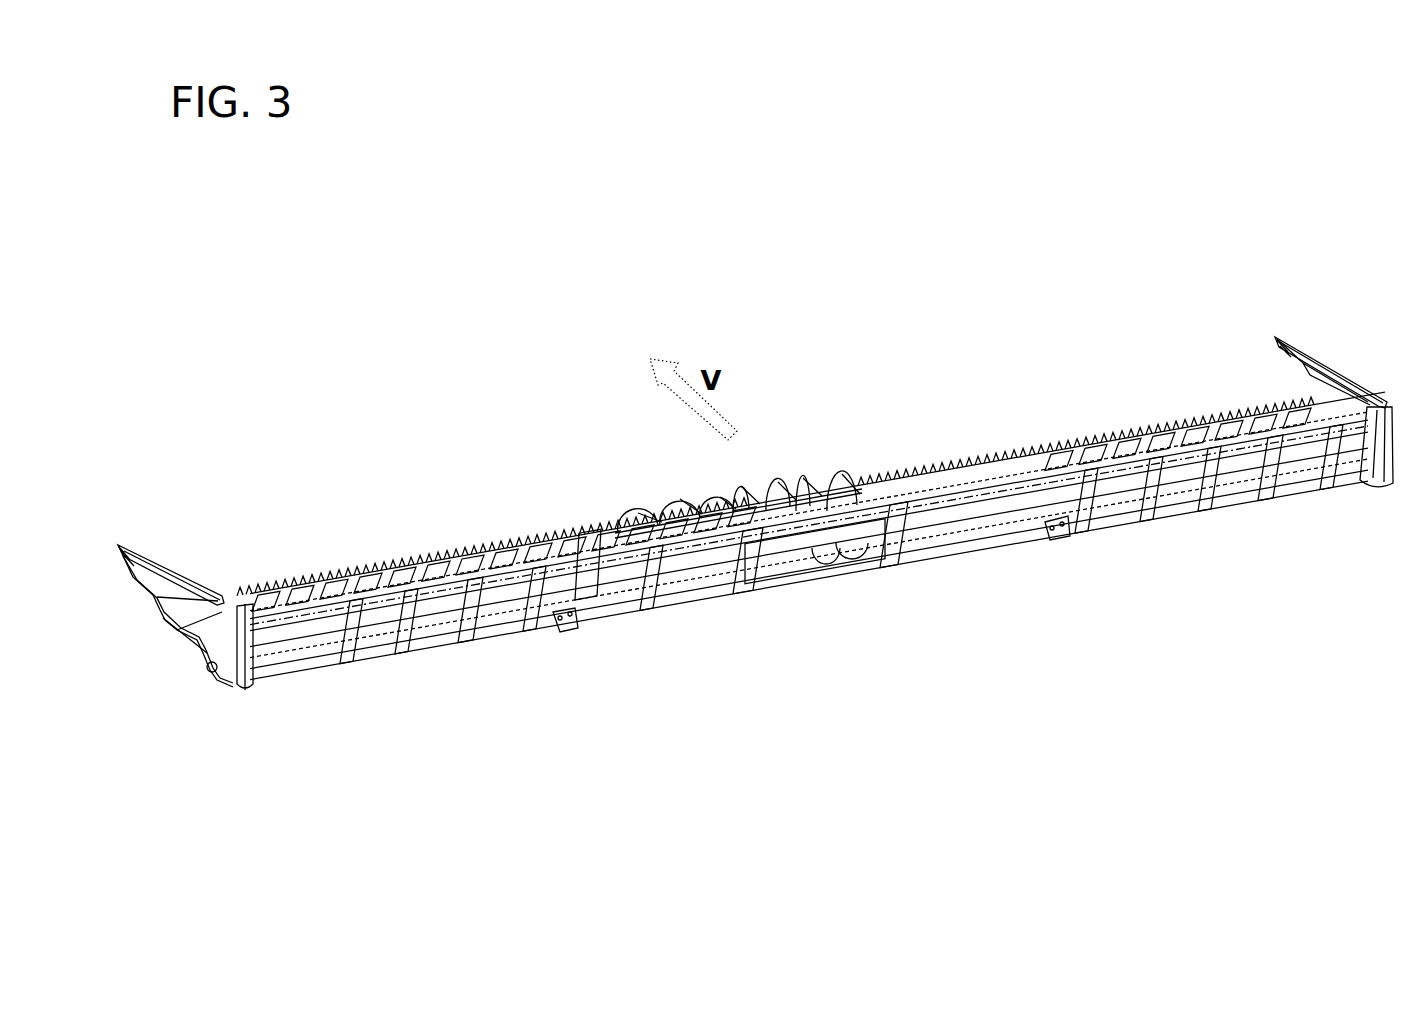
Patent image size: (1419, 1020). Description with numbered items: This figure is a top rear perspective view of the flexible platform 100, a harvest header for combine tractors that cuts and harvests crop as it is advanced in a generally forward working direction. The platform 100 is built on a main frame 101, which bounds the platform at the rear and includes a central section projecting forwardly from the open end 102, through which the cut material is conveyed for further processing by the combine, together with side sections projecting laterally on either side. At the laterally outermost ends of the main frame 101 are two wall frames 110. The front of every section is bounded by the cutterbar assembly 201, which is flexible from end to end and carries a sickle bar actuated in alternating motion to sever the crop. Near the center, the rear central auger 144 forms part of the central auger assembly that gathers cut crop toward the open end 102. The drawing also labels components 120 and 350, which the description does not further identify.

The flexible platform 100 is at (844, 364).
The main frame 101 is at (398, 597).
The open end 102 is at (832, 581).
The wall frames 110 is at (236, 650).
The crop divider 120 is at (161, 578).
The rear central auger 144 is at (795, 555).
The cutterbar assembly 201 is at (383, 563).
The sensor assembly 350 is at (566, 618).